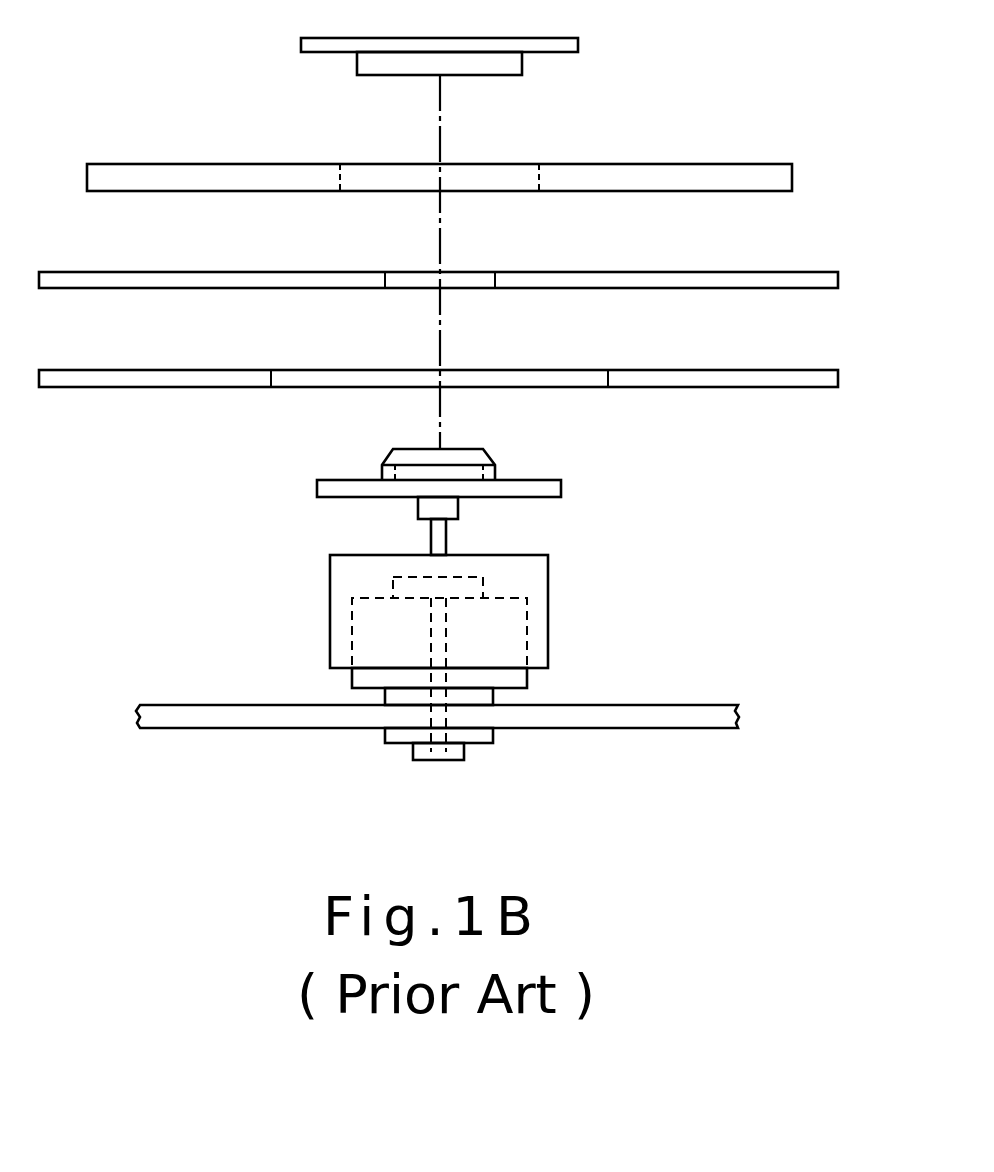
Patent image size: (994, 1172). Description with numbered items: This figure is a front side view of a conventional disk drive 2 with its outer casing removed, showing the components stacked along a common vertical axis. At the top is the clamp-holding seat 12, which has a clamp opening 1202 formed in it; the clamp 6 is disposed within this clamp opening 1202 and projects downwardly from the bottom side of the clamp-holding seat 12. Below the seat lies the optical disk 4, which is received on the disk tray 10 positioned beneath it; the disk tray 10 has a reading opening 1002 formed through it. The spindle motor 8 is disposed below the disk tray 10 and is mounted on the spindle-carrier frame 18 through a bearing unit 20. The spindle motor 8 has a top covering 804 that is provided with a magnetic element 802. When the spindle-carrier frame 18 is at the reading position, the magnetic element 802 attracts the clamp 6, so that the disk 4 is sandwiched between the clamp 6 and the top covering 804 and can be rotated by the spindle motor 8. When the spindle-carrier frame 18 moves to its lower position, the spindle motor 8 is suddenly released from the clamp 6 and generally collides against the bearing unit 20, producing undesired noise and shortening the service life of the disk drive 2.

The disk drive 2 is at (800, 64).
The clamp 6 is at (512, 63).
The clamp-holding seat 12 is at (480, 159).
The clamp opening 1202 is at (503, 178).
The optical disk 4 is at (838, 280).
The disk tray 10 is at (478, 361).
The reading opening 1002 is at (503, 378).
The top covering 804 is at (495, 470).
The magnetic element 802 is at (468, 472).
The spindle motor 8 is at (566, 641).
The spindle-carrier frame 18 is at (637, 718).
The bearing unit 20 is at (458, 751).